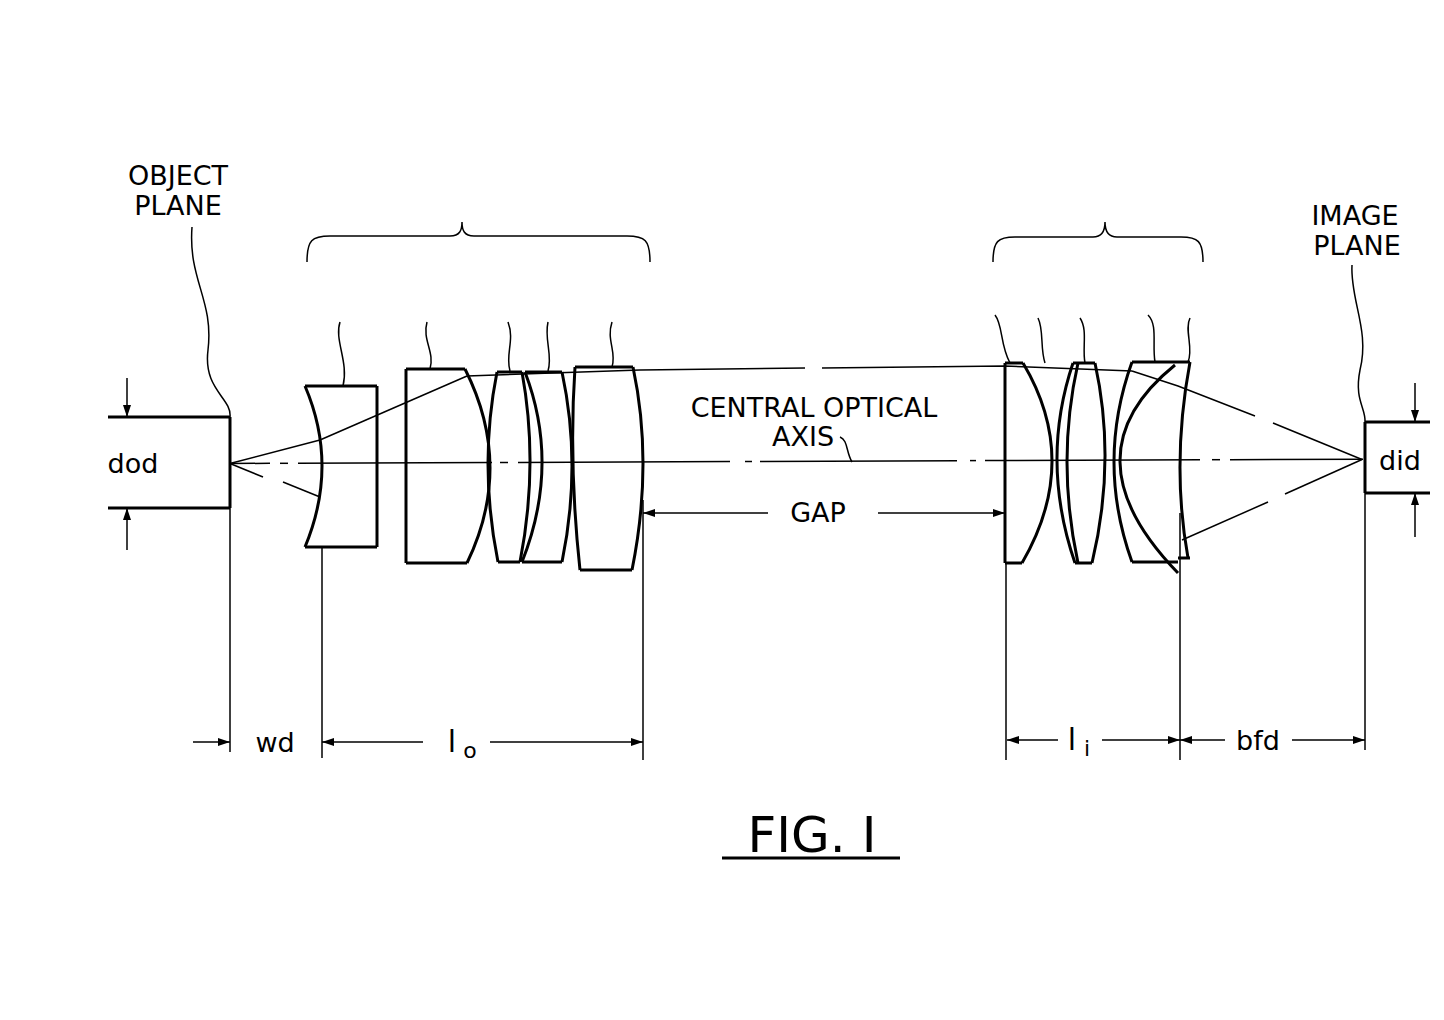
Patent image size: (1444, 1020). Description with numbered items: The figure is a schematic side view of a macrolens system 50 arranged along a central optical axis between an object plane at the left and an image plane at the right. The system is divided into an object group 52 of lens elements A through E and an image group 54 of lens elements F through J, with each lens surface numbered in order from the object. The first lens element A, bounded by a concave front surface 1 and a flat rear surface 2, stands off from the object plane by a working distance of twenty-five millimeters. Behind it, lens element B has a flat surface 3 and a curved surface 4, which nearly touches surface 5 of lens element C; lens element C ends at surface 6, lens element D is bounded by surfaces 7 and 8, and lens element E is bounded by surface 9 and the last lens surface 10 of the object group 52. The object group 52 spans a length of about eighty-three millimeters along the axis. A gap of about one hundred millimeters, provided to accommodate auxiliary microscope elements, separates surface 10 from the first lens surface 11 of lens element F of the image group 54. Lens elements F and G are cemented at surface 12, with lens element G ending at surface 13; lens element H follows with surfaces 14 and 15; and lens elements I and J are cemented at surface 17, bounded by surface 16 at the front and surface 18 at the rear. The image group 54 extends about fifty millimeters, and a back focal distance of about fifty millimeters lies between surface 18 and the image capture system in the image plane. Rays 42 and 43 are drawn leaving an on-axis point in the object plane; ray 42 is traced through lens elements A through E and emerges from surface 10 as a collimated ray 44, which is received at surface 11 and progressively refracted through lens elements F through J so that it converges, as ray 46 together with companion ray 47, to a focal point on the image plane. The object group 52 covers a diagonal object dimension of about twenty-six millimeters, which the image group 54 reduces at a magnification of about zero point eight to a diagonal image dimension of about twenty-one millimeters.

The lens surface 1 is at (306, 545).
The lens surface 2 is at (377, 545).
The lens surface 3 is at (406, 563).
The lens surface 4 is at (470, 565).
The lens surface 5 is at (498, 565).
The lens surface 6 is at (515, 563).
The lens surface 7 is at (549, 558).
The lens surface 8 is at (560, 562).
The lens surface 9 is at (578, 568).
The last lens surface 10 is at (637, 565).
The first lens surface 11 is at (1005, 555).
The lens surface 12 is at (1034, 563).
The lens surface 13 is at (1067, 563).
The lens surface 14 is at (1080, 563).
The lens surface 15 is at (1098, 565).
The lens surface 16 is at (1131, 565).
The lens surface 17 is at (1165, 565).
The lens surface 18 is at (1190, 505).
The light ray 42 is at (308, 437).
The light ray 43 is at (297, 483).
The collimated ray 44 is at (697, 370).
The converging ray 46 is at (1240, 407).
The companion ray 47 is at (1236, 518).
The macrolens system 50 is at (818, 147).
The object group 52 is at (497, 145).
The image group 54 is at (1124, 155).